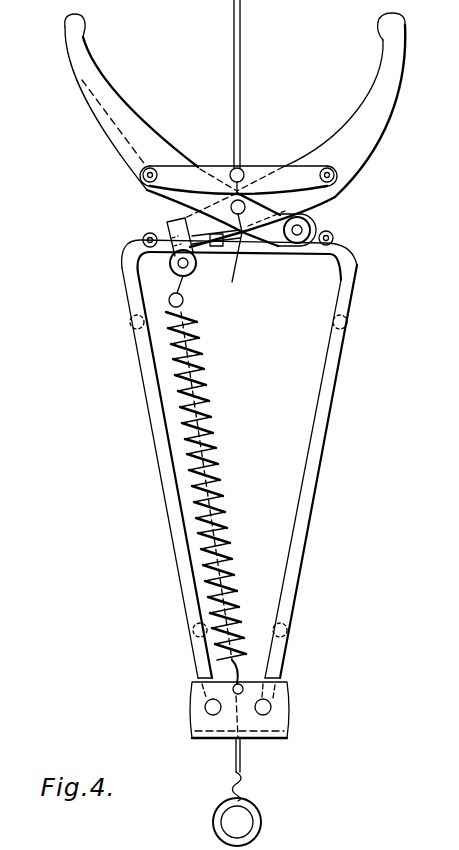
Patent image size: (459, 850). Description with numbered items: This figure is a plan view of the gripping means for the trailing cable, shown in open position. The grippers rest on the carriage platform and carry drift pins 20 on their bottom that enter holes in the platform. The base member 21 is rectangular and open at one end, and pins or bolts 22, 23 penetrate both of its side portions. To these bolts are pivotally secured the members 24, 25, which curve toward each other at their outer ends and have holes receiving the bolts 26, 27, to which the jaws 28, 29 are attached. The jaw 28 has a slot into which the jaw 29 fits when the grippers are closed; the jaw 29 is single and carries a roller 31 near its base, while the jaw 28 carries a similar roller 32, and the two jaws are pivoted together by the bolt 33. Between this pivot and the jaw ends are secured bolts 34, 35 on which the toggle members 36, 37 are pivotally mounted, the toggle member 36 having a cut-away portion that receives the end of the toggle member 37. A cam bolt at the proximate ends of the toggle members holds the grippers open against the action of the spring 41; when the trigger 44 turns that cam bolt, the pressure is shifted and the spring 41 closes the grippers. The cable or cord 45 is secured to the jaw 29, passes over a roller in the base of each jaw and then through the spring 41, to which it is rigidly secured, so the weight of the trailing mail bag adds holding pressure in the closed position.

The drift pins 20 is at (347, 320).
The base member 21 is at (203, 727).
The pin or bolt 22 is at (205, 710).
The pin or bolt 23 is at (273, 707).
The member 24 is at (165, 475).
The member 25 is at (318, 444).
The bolt 26 is at (142, 236).
The bolt 27 is at (334, 233).
The jaw 28 is at (113, 132).
The jaw 29 is at (357, 125).
The roller 31 is at (190, 277).
The roller 32 is at (310, 218).
The bolt 33 is at (242, 232).
The bolt 34 is at (152, 169).
The bolt 35 is at (340, 166).
The toggle member 36 is at (190, 185).
The toggle member 37 is at (277, 167).
The spring 41 is at (213, 490).
The trigger 44 is at (240, 50).
The cable or cord 45 is at (197, 345).